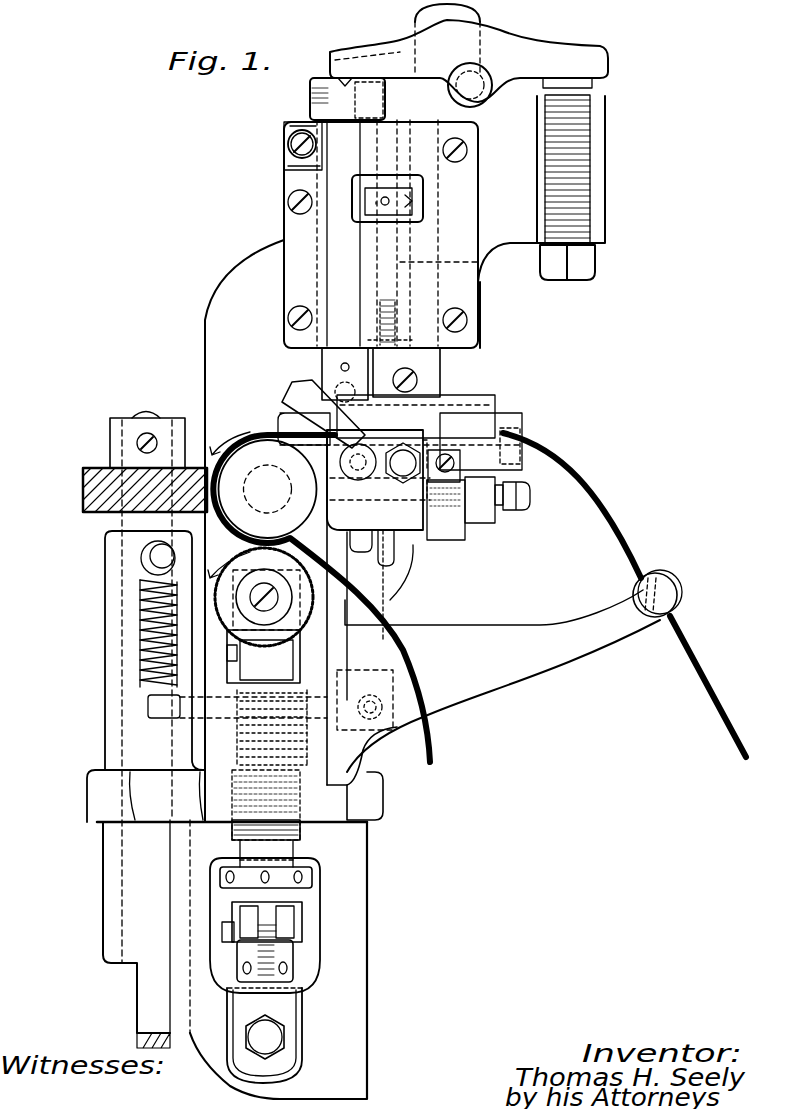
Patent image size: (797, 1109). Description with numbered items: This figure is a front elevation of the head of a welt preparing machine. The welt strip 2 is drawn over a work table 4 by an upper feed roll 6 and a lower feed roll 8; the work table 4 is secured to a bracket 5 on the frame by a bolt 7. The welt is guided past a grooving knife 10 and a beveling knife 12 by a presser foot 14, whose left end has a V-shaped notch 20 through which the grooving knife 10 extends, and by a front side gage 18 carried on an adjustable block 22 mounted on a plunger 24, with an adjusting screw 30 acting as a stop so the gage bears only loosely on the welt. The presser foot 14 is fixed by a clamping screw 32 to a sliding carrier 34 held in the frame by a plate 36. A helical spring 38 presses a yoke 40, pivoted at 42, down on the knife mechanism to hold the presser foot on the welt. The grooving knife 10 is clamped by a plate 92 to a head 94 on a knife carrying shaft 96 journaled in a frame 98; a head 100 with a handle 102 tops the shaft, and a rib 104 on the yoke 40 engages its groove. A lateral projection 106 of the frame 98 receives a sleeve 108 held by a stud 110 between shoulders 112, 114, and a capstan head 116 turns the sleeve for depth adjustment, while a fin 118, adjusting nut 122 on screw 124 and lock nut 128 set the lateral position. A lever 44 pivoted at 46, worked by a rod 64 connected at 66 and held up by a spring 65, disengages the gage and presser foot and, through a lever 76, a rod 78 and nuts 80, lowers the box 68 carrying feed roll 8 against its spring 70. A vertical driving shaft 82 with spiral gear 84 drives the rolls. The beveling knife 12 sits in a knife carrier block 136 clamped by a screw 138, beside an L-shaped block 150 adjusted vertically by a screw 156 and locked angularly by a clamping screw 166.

The welt strip 2 is at (616, 526).
The work table 4 is at (318, 448).
The bracket 5 is at (394, 535).
The upper feed roll 6 is at (290, 515).
The bolt 7 is at (358, 546).
The lower feed roll 8 is at (305, 612).
The grooving knife 10 is at (292, 392).
The beveling knife 12 is at (437, 478).
The presser foot 14 is at (497, 408).
The front side gage 18 is at (452, 433).
The notch 20 is at (300, 420).
The adjustable block 22 is at (372, 470).
The plunger 24 is at (403, 470).
The adjusting screw 30 is at (358, 462).
The clamping screw 32 is at (420, 378).
The sliding carrier 34 is at (422, 218).
The plate 36 is at (480, 288).
The helical spring 38 is at (592, 84).
The yoke 40 is at (535, 45).
The pivot 42 is at (492, 97).
The lever 44 is at (392, 600).
The pivot 46 is at (410, 683).
The rod 64 is at (176, 737).
The spring 65 is at (140, 638).
The connection 66 is at (148, 706).
The vertically sliding box 68 is at (252, 652).
The spring 70 is at (360, 728).
The lever 76 is at (286, 916).
The rod 78 is at (266, 880).
The adjustable nuts 80 is at (286, 962).
The vertical driving shaft 82 is at (135, 525).
The spiral gear 84 is at (100, 470).
The plate 92 is at (330, 388).
The head 94 is at (325, 365).
The knife carrying shaft 96 is at (340, 290).
The frame 98 is at (330, 230).
The head 100 is at (322, 84).
The handle 102 is at (428, 14).
The rib 104 is at (345, 78).
The lateral projection 106 is at (485, 262).
The sleeve 108 is at (414, 210).
The stud 110 is at (388, 135).
The shoulder 112 is at (402, 192).
The shoulder 114 is at (432, 330).
The capstan head 116 is at (410, 200).
The fin 118 is at (300, 130).
The adjusting nut 122 is at (294, 142).
The screw 124 is at (300, 152).
The lock nut 128 is at (304, 160).
The knife carrier block 136 is at (448, 532).
The screw 138 is at (452, 462).
The L-shaped block 150 is at (482, 522).
The screw 156 is at (503, 490).
The clamping screw 166 is at (522, 508).